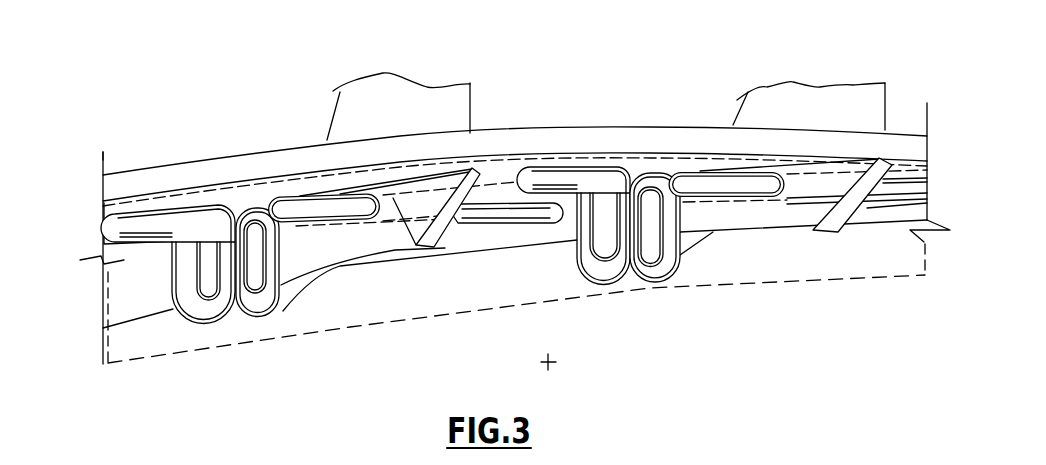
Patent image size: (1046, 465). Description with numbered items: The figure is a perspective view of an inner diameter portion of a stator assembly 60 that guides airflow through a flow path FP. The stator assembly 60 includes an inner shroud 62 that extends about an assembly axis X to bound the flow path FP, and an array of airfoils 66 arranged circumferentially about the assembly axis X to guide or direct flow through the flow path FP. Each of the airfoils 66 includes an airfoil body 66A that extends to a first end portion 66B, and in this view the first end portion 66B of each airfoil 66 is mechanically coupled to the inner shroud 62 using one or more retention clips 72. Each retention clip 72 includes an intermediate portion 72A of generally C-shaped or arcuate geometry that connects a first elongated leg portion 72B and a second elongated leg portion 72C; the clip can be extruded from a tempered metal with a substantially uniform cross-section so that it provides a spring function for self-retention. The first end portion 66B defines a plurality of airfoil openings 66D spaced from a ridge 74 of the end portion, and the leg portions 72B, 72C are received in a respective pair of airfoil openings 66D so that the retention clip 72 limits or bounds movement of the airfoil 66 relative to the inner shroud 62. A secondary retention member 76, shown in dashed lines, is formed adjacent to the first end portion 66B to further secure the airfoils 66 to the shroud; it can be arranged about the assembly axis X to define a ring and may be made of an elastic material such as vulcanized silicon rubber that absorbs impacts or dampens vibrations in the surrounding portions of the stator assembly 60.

The stator assembly 60 is at (134, 47).
The inner shroud 62 is at (115, 188).
The airfoils 66 is at (470, 92).
The airfoil body 66A is at (470, 125).
The first end portion 66B is at (370, 248).
The airfoil openings 66D is at (328, 225).
The retention clips 72 is at (430, 227).
The intermediate portion 72A is at (150, 213).
The first elongated leg portion 72B is at (299, 197).
The second elongated leg portion 72C is at (256, 208).
The ridge 74 is at (354, 258).
The secondary retention member 76 is at (136, 363).
The flow path FP is at (583, 105).
The assembly axis X is at (555, 356).